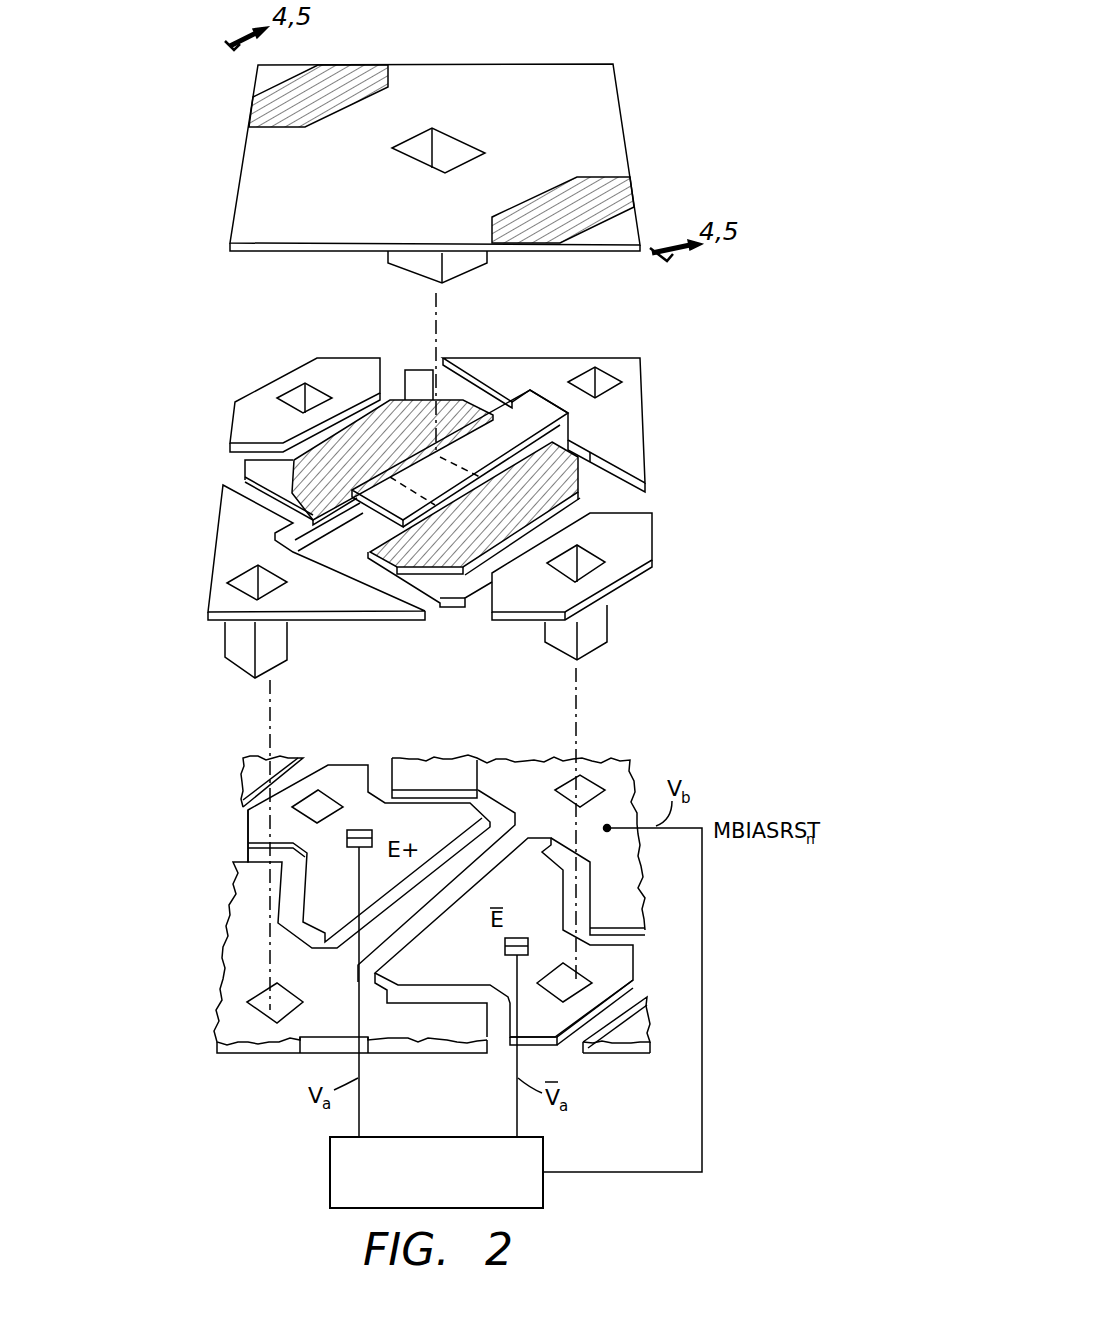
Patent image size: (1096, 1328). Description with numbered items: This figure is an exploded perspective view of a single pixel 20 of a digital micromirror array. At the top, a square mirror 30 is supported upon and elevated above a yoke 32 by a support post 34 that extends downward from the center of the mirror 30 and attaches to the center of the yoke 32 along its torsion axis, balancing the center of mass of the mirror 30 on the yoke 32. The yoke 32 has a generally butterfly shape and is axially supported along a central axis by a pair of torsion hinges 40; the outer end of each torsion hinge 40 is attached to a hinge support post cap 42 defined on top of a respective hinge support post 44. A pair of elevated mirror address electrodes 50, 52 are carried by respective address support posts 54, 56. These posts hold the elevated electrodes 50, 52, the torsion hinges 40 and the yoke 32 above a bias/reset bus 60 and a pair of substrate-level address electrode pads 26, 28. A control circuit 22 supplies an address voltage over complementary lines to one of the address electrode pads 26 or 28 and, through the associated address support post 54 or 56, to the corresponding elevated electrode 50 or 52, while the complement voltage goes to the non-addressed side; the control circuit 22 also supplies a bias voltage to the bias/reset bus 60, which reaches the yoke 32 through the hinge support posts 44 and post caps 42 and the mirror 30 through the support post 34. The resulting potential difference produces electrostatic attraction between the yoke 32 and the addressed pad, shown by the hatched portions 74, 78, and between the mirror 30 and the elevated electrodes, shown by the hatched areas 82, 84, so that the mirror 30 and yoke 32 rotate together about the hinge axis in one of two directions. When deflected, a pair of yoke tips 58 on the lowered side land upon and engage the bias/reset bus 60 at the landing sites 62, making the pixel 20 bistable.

The pixel 20 is at (734, 385).
The control circuit 22 is at (330, 1168).
The address electrode 26 is at (433, 810).
The address electrode 28 is at (627, 967).
The mirror 30 is at (552, 72).
The yoke 32 is at (452, 493).
The support post 34 is at (415, 265).
The torsion hinge 40 is at (558, 407).
The hinge support post cap 42 is at (220, 563).
The hinge support post 44 is at (240, 660).
The elevated mirror address electrode 50 is at (279, 395).
The elevated mirror address electrode 52 is at (640, 543).
The address support post 54 is at (562, 640).
The address support post 56 is at (295, 390).
The yoke tip 58 is at (415, 372).
The bias/reset bus 60 is at (222, 1016).
The landing site 62 is at (412, 765).
The hatched region 74 is at (457, 400).
The hatched portion 78 is at (570, 457).
The hatched area 82 is at (257, 113).
The hatched area 84 is at (632, 196).